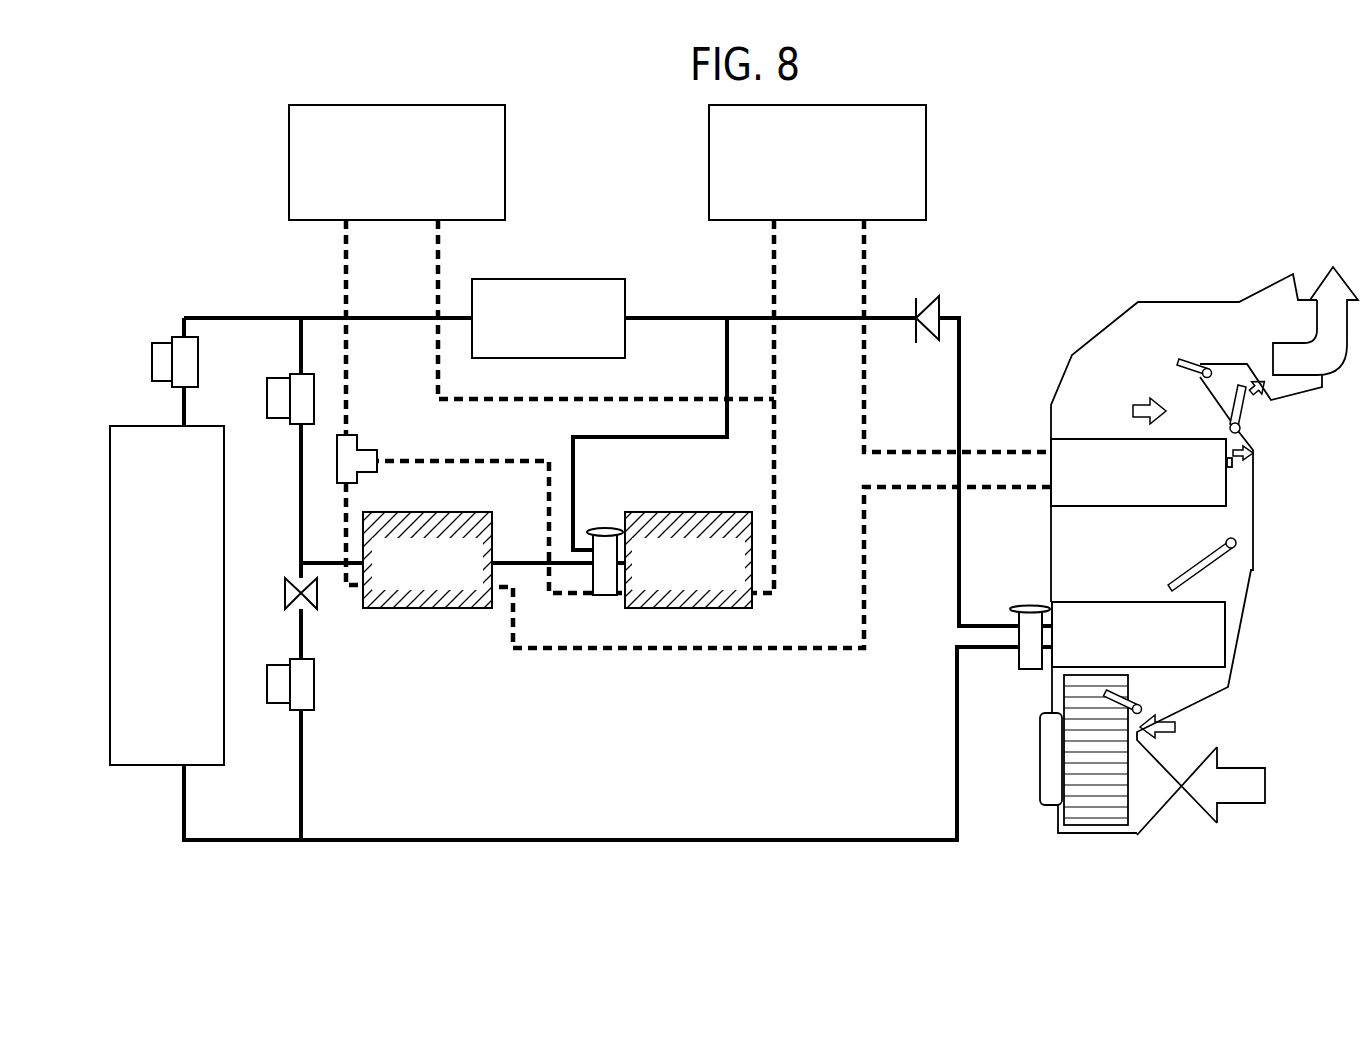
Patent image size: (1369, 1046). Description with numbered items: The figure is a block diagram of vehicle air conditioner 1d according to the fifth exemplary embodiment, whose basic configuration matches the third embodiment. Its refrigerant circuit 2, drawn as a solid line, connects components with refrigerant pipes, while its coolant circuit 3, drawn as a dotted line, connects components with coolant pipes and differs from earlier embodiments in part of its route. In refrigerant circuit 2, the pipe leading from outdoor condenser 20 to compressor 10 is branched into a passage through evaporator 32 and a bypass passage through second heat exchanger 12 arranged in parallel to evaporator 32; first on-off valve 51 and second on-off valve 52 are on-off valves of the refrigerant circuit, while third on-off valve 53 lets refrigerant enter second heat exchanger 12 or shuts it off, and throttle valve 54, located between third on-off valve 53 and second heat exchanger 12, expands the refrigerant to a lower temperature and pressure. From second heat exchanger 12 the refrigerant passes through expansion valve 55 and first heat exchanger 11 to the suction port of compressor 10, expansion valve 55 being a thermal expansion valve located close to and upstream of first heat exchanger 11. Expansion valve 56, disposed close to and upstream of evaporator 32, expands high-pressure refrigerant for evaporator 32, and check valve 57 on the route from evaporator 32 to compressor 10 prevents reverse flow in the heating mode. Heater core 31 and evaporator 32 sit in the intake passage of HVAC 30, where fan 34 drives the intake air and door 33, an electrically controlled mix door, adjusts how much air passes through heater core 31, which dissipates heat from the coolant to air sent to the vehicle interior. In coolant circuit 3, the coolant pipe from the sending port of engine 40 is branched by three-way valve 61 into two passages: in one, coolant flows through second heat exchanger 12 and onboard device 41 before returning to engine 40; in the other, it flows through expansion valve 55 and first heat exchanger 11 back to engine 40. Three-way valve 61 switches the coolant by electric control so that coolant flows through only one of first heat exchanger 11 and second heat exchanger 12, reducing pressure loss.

The vehicle air conditioner 1d is at (1038, 142).
The refrigerant circuit 2 is at (226, 296).
The coolant circuit 3 is at (796, 649).
The compressor 10 is at (548, 278).
The first heat exchanger 11 is at (690, 512).
The second heat exchanger 12 is at (424, 609).
The outdoor condenser 20 is at (224, 470).
The HVAC 30 is at (1247, 433).
The heater core 31 is at (1227, 482).
The evaporator 32 is at (1227, 633).
The door 33 is at (1213, 569).
The fan 34 is at (1095, 820).
The engine 40 is at (505, 157).
The onboard device 41 is at (926, 157).
The first on-off valve 51 is at (163, 340).
The second on-off valve 52 is at (280, 377).
The third on-off valve 53 is at (315, 683).
The throttle valve 54 is at (285, 593).
The expansion valve 55 is at (603, 527).
The expansion valve 56 is at (1028, 608).
The check valve 57 is at (932, 302).
The three-way valve 61 is at (373, 443).